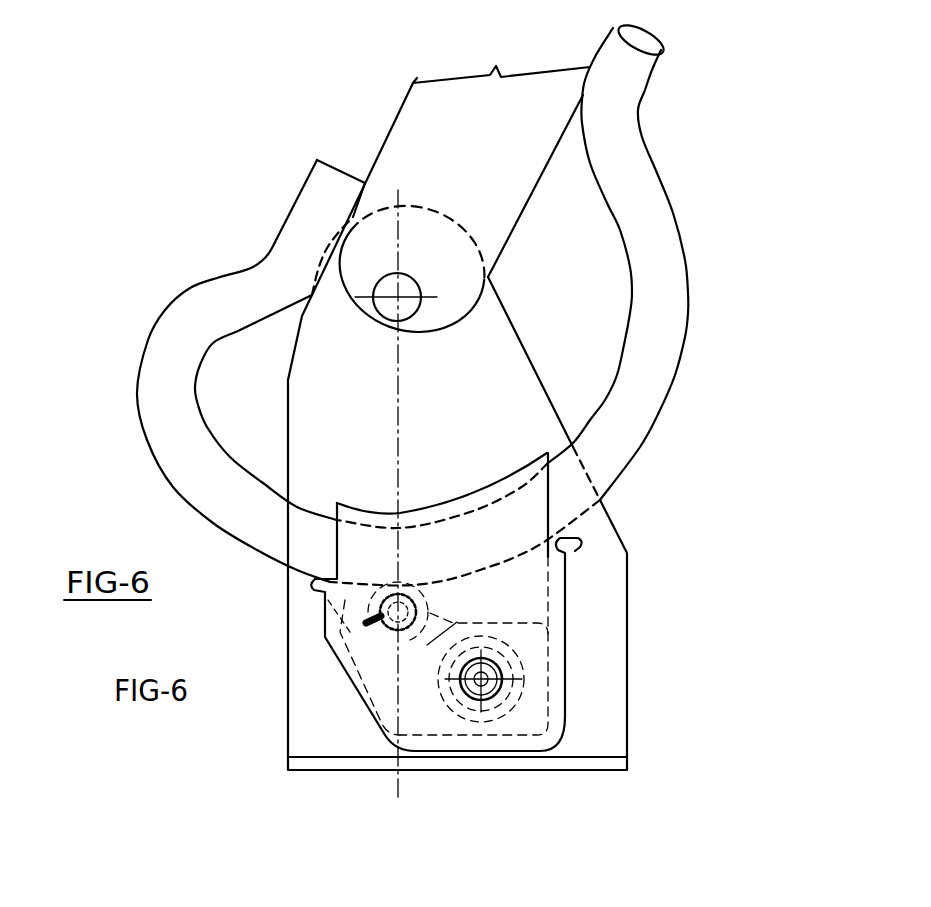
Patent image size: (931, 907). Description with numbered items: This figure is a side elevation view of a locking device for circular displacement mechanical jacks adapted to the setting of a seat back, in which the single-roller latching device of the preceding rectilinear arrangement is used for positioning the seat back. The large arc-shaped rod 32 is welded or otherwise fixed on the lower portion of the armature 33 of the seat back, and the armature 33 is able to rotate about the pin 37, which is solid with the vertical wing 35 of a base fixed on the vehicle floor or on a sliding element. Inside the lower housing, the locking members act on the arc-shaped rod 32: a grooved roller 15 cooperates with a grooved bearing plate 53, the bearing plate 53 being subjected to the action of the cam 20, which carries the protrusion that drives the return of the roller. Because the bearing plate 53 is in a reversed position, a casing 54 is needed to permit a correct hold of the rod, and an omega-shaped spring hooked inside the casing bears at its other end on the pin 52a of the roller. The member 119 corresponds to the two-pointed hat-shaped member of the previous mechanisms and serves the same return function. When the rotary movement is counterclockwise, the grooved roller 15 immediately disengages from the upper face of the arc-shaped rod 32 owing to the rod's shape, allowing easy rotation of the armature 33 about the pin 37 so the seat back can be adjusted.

The grooved roller 15 is at (375, 615).
The cam 20 is at (490, 723).
The arc-shaped rod 32 is at (672, 342).
The armature 33 is at (497, 183).
The vertical wing 35 is at (508, 390).
The pin 37 is at (392, 312).
The pin of the roller 52a is at (513, 672).
The bearing plate 53 is at (385, 677).
The casing 54 is at (557, 718).
The two-pointed hat-shaped member 119 is at (427, 645).